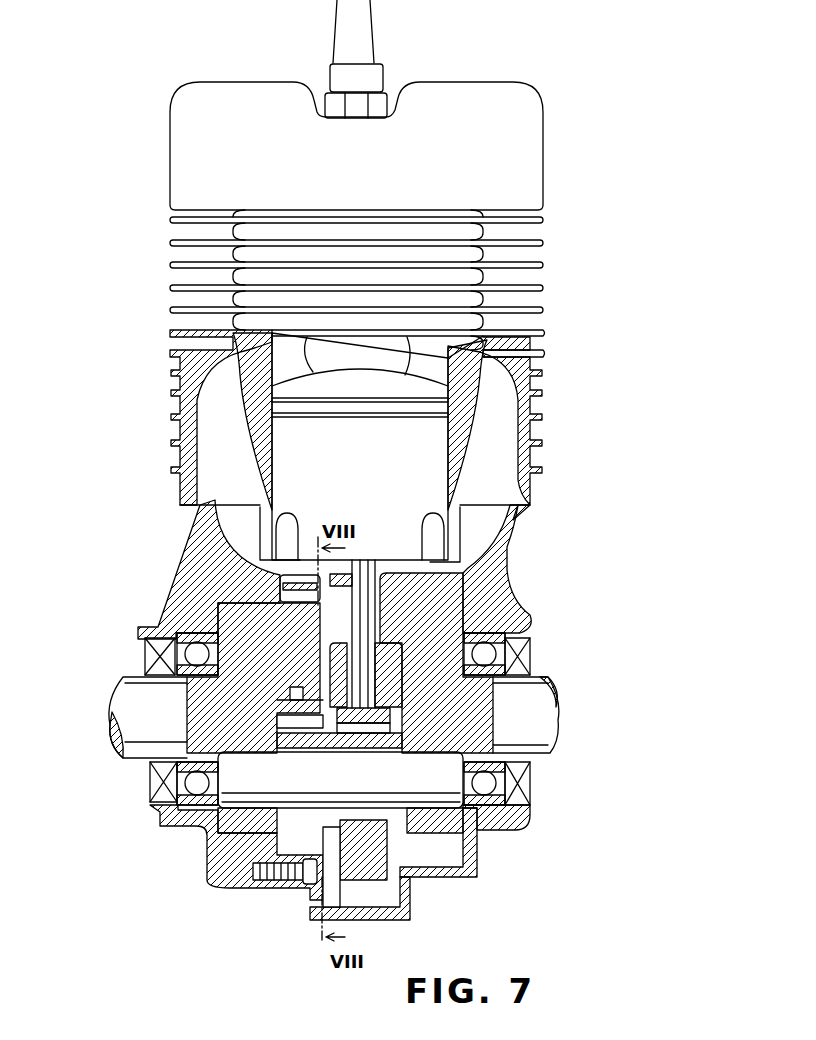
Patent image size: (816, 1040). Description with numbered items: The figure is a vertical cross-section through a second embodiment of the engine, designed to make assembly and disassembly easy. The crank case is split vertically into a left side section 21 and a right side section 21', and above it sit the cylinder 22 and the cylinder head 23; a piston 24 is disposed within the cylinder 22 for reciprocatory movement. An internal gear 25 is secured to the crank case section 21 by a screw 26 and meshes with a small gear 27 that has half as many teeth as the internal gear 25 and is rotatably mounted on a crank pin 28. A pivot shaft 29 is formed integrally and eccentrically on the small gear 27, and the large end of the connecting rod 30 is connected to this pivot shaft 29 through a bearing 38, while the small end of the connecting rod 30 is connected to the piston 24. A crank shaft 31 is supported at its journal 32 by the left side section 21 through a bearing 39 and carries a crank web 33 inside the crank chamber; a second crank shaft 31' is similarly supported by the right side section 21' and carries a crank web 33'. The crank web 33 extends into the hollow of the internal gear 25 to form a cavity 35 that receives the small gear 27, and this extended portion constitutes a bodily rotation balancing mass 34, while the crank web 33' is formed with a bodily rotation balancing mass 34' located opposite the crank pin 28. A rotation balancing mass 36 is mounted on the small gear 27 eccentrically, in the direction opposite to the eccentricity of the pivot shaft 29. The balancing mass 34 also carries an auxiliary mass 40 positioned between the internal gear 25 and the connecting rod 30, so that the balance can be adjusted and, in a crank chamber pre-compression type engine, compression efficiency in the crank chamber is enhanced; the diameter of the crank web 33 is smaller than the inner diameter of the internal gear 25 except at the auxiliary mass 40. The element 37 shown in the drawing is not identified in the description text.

The crank case left side section 21 is at (274, 710).
The crank case right side section 21' is at (463, 859).
The cylinder 22 is at (473, 299).
The cylinder head 23 is at (537, 156).
The piston 24 is at (375, 476).
The internal gear 25 is at (297, 580).
The screw 26 is at (277, 880).
The small gear 27 is at (277, 736).
The crank pin 28 is at (442, 782).
The pivot shaft 29 is at (380, 863).
The connecting rod 30 is at (393, 577).
The crank shaft 31 is at (132, 731).
The crank shaft 31' is at (549, 715).
The journal 32 is at (130, 683).
The crank web 33 is at (247, 802).
The crank web 33' is at (476, 837).
The bodily rotation balancing mass 34 is at (253, 678).
The bodily rotation balancing mass 34' is at (466, 660).
The cavity 35 is at (297, 690).
The rotation balancing mass 36 is at (335, 645).
The crankpin 37 is at (305, 749).
The bearing 38 is at (377, 887).
The bearing 39 is at (500, 632).
The auxiliary mass 40 is at (340, 572).